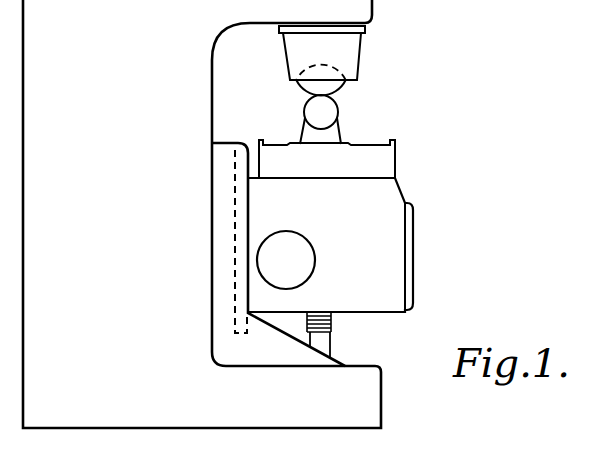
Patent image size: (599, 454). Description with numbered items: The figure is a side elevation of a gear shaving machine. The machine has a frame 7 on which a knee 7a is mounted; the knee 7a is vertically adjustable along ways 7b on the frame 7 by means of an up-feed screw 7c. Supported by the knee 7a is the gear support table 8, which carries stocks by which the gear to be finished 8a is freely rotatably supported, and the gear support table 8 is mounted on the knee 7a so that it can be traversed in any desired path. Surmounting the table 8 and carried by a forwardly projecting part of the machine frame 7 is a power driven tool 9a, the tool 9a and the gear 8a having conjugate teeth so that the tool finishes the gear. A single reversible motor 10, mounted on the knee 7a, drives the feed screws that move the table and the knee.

The frame 7 is at (115, 144).
The knee 7a is at (388, 247).
The ways 7b is at (235, 325).
The up-feed screw 7c is at (331, 323).
The gear support table 8 is at (378, 159).
The gear to be finished 8a is at (338, 115).
The power driven tool 9a is at (347, 88).
The reversible motor 10 is at (300, 262).